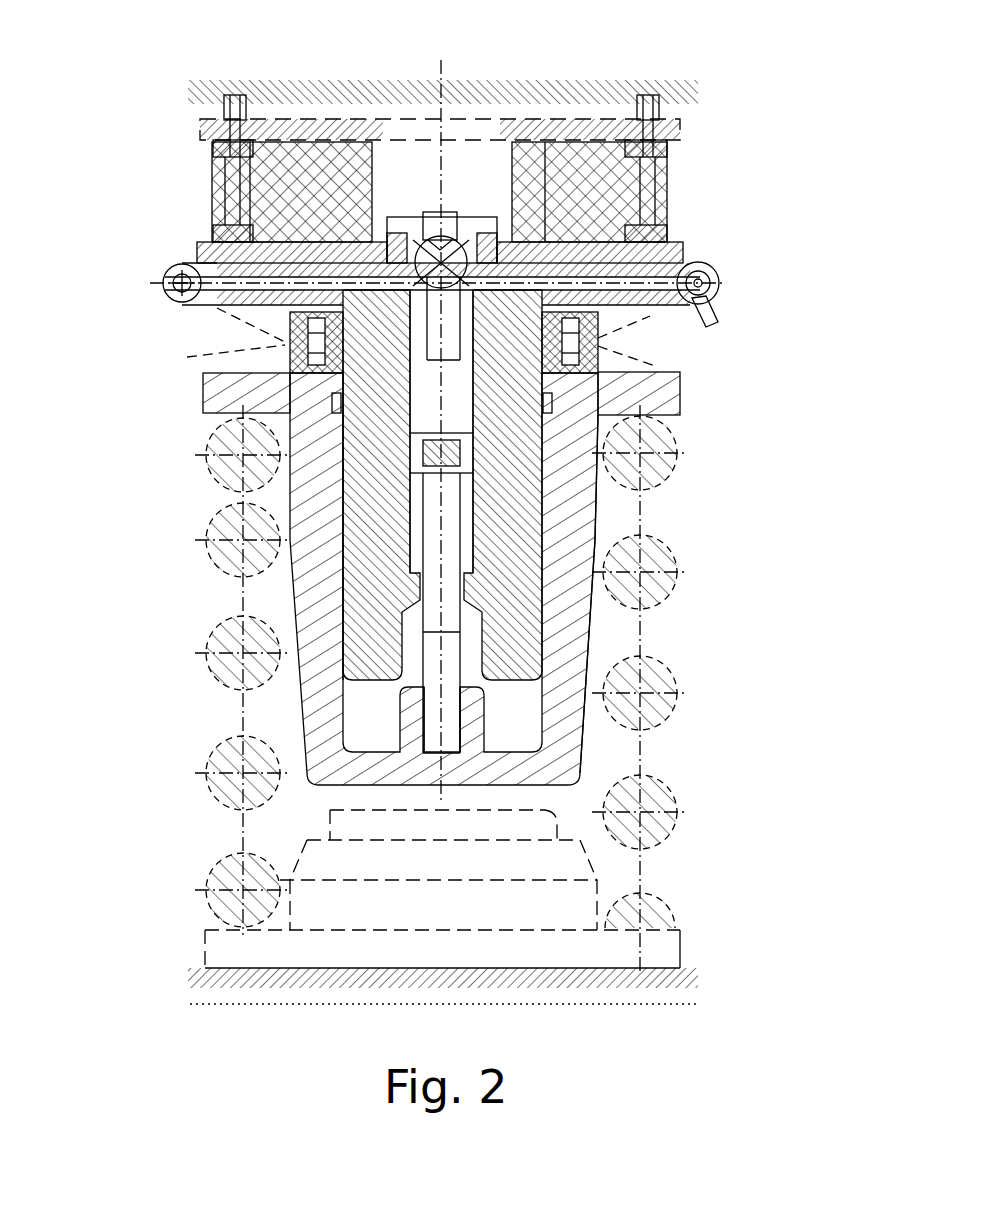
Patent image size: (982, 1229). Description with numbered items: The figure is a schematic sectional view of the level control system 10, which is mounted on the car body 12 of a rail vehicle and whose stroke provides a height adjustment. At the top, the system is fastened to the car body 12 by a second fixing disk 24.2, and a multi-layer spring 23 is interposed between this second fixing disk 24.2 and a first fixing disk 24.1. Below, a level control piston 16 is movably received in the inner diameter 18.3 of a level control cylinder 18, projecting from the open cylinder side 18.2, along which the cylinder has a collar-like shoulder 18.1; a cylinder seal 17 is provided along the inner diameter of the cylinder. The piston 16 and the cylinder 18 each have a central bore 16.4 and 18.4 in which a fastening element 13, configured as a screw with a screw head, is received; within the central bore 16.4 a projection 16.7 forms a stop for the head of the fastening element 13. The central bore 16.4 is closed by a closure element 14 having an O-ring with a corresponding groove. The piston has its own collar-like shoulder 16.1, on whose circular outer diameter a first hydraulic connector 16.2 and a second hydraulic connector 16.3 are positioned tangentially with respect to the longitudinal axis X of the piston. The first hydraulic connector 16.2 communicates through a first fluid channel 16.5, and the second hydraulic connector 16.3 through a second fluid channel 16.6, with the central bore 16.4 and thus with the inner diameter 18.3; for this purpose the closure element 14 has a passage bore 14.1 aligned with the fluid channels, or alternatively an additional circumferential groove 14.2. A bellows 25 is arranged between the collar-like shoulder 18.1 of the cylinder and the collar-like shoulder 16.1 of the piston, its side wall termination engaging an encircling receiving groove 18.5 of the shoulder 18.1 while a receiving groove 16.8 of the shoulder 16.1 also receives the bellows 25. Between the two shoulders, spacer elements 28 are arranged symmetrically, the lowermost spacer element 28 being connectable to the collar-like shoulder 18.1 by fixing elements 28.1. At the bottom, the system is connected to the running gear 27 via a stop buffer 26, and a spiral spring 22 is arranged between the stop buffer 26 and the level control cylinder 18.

The level control system 10 is at (157, 54).
The car body 12 is at (655, 88).
The fastening element 13 is at (474, 574).
The closure element 14 is at (510, 210).
The passage bore 14.1 is at (464, 222).
The circumferential groove 14.2 is at (388, 222).
The level control piston 16 is at (357, 555).
The collar-like shoulder 16.1 is at (622, 326).
The first hydraulic connector 16.2 is at (158, 280).
The second hydraulic connector 16.3 is at (712, 293).
The central bore 16.4 is at (600, 548).
The first fluid channel 16.5 is at (207, 232).
The second fluid channel 16.6 is at (655, 258).
The projection 16.7 is at (598, 620).
The receiving groove 16.8 is at (187, 322).
The cylinder seal 17 is at (676, 459).
The level control cylinder 18 is at (320, 680).
The collar-like shoulder 18.1 is at (672, 383).
The open cylinder side 18.2 is at (203, 374).
The inner diameter 18.3 is at (340, 483).
The central bore 18.4 is at (467, 690).
The encircling receiving groove 18.5 is at (187, 358).
The spiral spring 22 is at (205, 905).
The multi-layer spring 23 is at (590, 163).
The first fixing disk 24.1 is at (226, 225).
The second fixing disk 24.2 is at (249, 128).
The bellows 25 is at (602, 345).
The stop buffer 26 is at (578, 893).
The running gear 27 is at (640, 990).
The spacer elements 28 is at (322, 366).
The fixing elements 28.1 is at (340, 361).
The longitudinal axis X is at (327, 822).